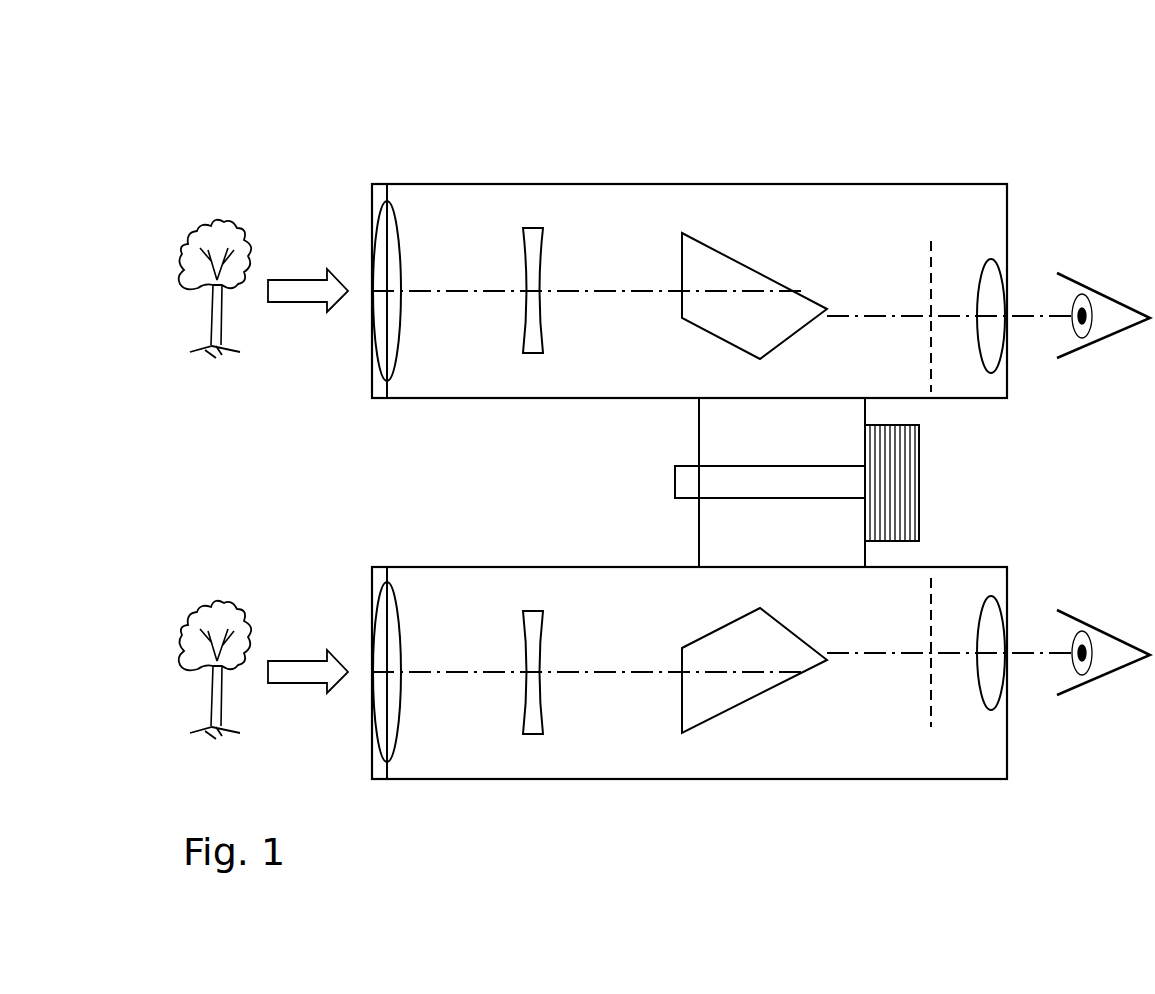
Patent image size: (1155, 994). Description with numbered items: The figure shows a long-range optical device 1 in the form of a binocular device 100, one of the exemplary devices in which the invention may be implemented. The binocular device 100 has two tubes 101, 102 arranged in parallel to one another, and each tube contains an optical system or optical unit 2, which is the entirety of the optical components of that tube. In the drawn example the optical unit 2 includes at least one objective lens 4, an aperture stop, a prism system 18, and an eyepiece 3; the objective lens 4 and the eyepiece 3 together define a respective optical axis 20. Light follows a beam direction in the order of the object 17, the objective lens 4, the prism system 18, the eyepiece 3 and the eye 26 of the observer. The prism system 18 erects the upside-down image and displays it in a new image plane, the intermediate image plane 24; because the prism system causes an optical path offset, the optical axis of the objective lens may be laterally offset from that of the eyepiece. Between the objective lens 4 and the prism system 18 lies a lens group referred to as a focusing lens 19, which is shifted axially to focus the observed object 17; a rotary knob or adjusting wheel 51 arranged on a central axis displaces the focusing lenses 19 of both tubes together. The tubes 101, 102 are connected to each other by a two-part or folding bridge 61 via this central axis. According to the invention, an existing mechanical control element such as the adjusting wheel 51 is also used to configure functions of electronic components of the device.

The long-range optical device 1 is at (635, 450).
The binocular device 100 is at (689, 474).
The optical unit 2 is at (418, 205).
The eyepiece 3 is at (995, 553).
The objective lens 4 is at (408, 412).
The object 17 is at (213, 600).
The prism system 18 is at (690, 238).
The focusing lens 19 is at (523, 228).
The optical axis 20 is at (873, 315).
The intermediate image plane 24 is at (933, 257).
The eye 26 is at (1097, 348).
The adjusting wheel 51 is at (919, 507).
The folding bridge 61 is at (699, 436).
The tube 101 is at (738, 184).
The tube 102 is at (580, 779).